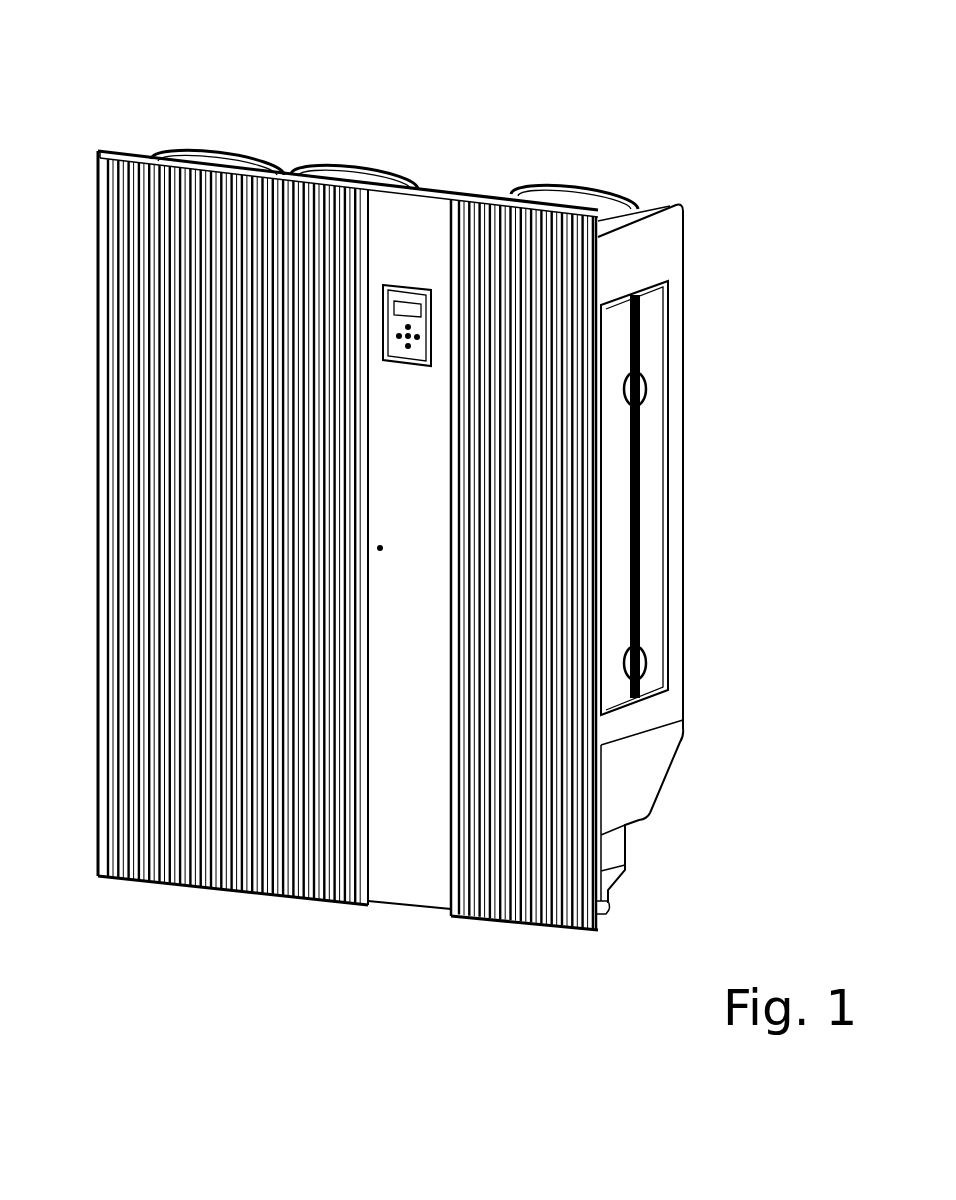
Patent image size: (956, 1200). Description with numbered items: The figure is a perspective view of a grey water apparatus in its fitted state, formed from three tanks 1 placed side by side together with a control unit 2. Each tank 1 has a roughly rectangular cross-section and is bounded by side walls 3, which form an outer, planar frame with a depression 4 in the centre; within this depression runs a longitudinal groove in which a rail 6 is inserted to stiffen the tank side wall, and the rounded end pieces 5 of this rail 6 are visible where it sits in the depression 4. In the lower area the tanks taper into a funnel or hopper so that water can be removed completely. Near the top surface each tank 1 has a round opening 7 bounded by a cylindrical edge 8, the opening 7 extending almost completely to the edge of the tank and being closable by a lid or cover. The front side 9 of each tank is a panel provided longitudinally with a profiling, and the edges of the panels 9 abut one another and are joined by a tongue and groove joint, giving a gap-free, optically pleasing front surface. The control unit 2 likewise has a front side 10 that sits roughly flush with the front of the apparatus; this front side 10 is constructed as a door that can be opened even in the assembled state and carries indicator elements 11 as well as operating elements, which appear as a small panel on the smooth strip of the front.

The tank 1 is at (648, 192).
The control unit 2 is at (480, 176).
The side wall 3 is at (655, 242).
The depression 4 is at (660, 512).
The handle knob 5 is at (638, 381).
The rail 6 is at (632, 447).
The round opening 7 is at (222, 152).
The cylindrical edge 8 is at (347, 166).
The front side 9 is at (167, 807).
The front side 10 is at (410, 870).
The indicator elements 11 is at (404, 278).